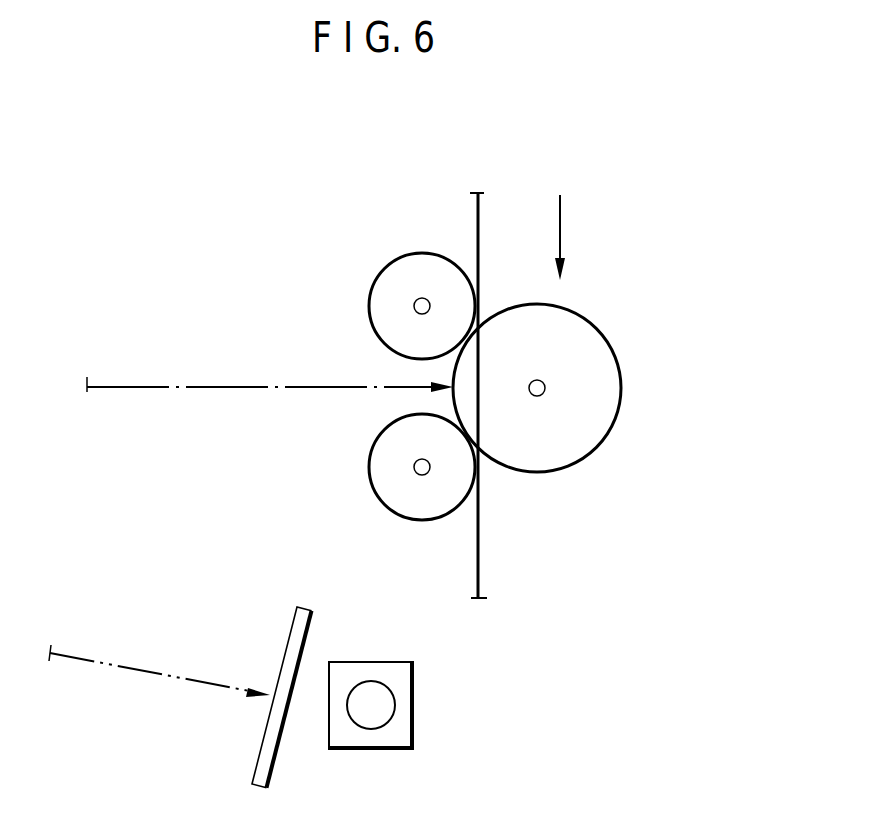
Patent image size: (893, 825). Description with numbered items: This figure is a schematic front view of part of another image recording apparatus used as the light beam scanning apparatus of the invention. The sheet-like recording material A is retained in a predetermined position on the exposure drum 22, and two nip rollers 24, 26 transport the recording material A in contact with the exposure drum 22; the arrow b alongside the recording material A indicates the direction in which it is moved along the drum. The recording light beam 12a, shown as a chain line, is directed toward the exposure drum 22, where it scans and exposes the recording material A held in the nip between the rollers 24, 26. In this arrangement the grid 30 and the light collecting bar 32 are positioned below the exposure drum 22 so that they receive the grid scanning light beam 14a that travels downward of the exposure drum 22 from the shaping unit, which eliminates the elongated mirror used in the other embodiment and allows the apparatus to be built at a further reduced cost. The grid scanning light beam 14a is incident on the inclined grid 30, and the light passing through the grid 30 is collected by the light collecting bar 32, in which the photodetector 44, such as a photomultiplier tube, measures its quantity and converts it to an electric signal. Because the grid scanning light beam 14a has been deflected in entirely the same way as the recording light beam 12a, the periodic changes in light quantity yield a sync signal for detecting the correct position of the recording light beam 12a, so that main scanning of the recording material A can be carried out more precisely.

The recording material A is at (480, 237).
The conveying direction b is at (567, 237).
The recording light beam 12a is at (220, 383).
The grid scanning light beam 14a is at (147, 668).
The exposure drum 22 is at (555, 455).
The nip roller 24 is at (415, 260).
The nip roller 26 is at (425, 507).
The grid 30 is at (307, 608).
The light collecting bar 32 is at (402, 717).
The photodetector 44 is at (372, 720).